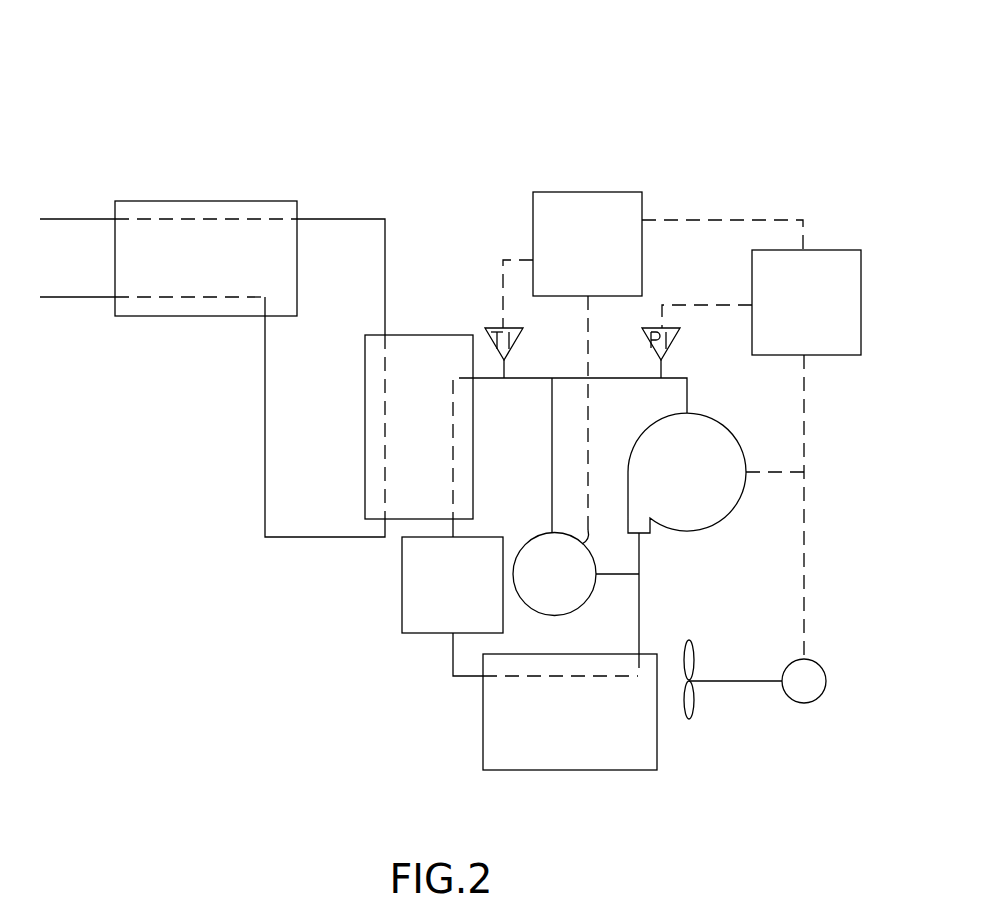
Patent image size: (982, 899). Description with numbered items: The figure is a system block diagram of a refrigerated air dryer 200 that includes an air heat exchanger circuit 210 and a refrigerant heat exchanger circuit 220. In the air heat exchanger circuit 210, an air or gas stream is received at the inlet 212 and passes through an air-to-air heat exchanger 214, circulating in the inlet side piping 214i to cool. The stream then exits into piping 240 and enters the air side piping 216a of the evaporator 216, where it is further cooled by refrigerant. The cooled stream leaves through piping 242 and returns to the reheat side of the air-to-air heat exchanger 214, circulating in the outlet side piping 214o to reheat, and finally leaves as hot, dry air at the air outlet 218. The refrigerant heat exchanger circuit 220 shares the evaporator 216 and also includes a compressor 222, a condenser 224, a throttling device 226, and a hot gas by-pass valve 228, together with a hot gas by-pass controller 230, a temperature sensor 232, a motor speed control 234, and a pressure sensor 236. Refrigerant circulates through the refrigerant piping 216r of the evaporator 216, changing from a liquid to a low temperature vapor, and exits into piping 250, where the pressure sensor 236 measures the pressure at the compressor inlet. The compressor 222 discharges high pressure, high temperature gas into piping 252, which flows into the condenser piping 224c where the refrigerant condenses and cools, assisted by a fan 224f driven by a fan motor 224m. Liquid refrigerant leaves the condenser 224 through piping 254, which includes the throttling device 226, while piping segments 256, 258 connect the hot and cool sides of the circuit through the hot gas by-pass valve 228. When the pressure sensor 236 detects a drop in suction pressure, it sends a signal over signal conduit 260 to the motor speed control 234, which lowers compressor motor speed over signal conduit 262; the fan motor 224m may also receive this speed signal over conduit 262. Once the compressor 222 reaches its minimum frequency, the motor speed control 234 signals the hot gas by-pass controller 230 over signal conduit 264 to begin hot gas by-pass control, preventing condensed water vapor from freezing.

The refrigerated air dryer 200 is at (233, 86).
The air heat exchanger circuit 210 is at (129, 490).
The inlet 212 is at (77, 218).
The air-to-air heat exchanger 214 is at (276, 201).
The inlet side piping 214i is at (150, 219).
The outlet side piping 214o is at (146, 298).
The evaporator 216 is at (421, 335).
The air side piping 216a is at (385, 361).
The refrigerant piping 216r is at (453, 449).
The air outlet 218 is at (76, 298).
The refrigerant heat exchanger circuit 220 is at (816, 724).
The compressor 222 is at (728, 518).
The condenser 224 is at (658, 754).
The condenser piping 224c is at (545, 675).
The fan 224f is at (695, 656).
The fan motor 224m is at (822, 668).
The throttling device 226 is at (414, 636).
The hot gas by-pass valve 228 is at (560, 614).
The hot gas by-pass controller 230 is at (642, 200).
The temperature sensor 232 is at (517, 338).
The motor speed control 234 is at (842, 250).
The pressure sensor 236 is at (676, 344).
The piping 240 is at (385, 219).
The piping 242 is at (297, 537).
The piping 250 is at (525, 379).
The piping 252 is at (640, 608).
The piping 254 is at (460, 680).
The piping segment 256 is at (552, 465).
The piping segment 258 is at (606, 574).
The signal conduit 260 is at (700, 305).
The signal conduit 262 is at (804, 418).
The signal conduit 264 is at (754, 220).